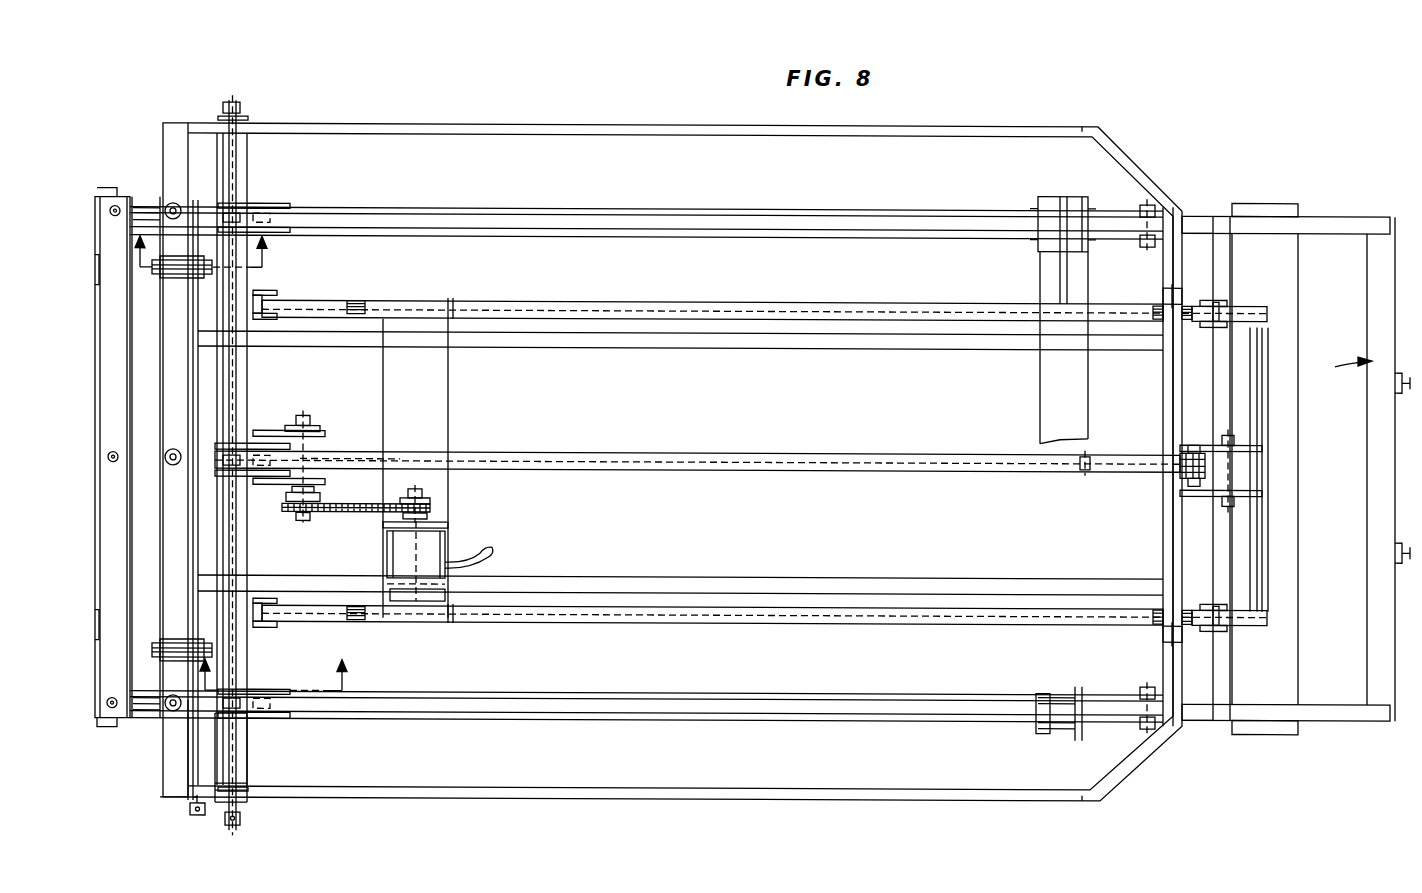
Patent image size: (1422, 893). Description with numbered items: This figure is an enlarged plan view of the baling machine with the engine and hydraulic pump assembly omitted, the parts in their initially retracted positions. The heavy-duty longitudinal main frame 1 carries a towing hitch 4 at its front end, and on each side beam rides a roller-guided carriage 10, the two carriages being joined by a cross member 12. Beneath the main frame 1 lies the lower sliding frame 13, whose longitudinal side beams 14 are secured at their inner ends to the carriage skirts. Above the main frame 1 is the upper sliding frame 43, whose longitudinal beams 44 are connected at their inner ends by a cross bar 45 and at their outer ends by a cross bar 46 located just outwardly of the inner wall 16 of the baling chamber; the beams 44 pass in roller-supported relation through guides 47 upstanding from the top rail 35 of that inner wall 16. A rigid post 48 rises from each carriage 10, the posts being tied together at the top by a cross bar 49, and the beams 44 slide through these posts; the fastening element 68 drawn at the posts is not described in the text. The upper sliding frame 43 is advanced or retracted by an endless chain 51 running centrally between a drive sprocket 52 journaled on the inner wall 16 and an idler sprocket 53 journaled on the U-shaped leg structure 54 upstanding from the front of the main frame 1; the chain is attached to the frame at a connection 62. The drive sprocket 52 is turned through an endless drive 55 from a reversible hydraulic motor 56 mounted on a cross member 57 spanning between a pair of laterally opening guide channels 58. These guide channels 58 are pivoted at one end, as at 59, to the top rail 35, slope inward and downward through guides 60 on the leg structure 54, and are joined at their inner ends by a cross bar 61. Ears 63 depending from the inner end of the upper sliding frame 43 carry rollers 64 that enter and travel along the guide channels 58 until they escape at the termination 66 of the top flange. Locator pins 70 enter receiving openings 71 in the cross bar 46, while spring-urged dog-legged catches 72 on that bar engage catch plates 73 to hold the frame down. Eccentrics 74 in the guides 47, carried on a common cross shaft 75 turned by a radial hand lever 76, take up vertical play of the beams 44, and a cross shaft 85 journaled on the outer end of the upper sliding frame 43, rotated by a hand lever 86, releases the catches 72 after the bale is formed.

The main frame 1 is at (1345, 364).
The towing hitch 4 is at (1400, 376).
The roller-guided carriage 10 is at (1042, 428).
The cross member 12 is at (1290, 301).
The lower sliding frame 13 is at (1250, 738).
The side beams 14 is at (218, 270).
The inner wall 16 is at (299, 670).
The top rail 35 is at (249, 385).
The upper sliding frame 43 is at (567, 124).
The longitudinal beams 44 is at (834, 236).
The cross bar 45 is at (1160, 518).
The cross bar 46 is at (168, 150).
The guides 47 is at (265, 213).
The rigid post 48 is at (1040, 232).
The cross bar 49 is at (1040, 387).
The endless chain 51 is at (735, 452).
The drive sprocket 52 is at (322, 456).
The idler sprocket 53 is at (1210, 462).
The U-shaped leg structure 54 is at (1334, 213).
The endless drive 55 is at (358, 512).
The reversible hydraulic motor 56 is at (392, 552).
The cross member 57 is at (448, 412).
The guide channels 58 is at (600, 302).
The pivot 59 is at (277, 294).
The guides 60 is at (1210, 325).
The cross bar 61 is at (1268, 556).
The connection 62 is at (1084, 470).
The ears 63 is at (1163, 290).
The rollers 64 is at (1156, 308).
The termination of top flange 66 is at (452, 300).
The nuts 68 is at (1145, 206).
The locator pins 70 is at (115, 206).
The receiving openings 71 is at (166, 204).
The dog-legged catches 72 is at (178, 280).
The catch plates 73 is at (98, 272).
The eccentrics 74 is at (240, 212).
The cross shaft 75 is at (234, 756).
The hand lever 76 is at (228, 826).
The cross shaft 85 is at (190, 775).
The hand lever 86 is at (192, 815).